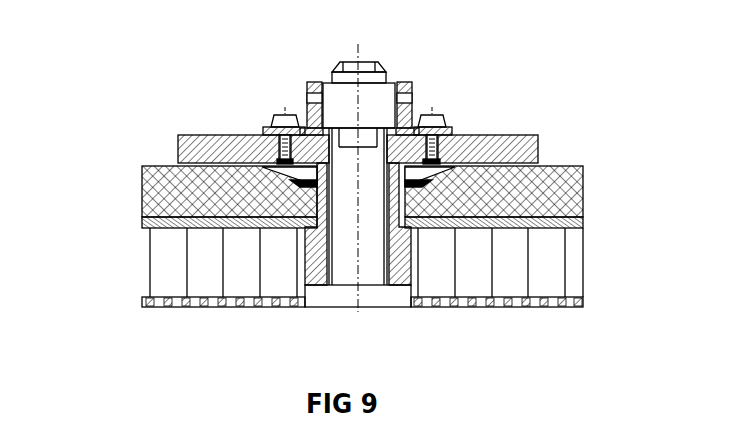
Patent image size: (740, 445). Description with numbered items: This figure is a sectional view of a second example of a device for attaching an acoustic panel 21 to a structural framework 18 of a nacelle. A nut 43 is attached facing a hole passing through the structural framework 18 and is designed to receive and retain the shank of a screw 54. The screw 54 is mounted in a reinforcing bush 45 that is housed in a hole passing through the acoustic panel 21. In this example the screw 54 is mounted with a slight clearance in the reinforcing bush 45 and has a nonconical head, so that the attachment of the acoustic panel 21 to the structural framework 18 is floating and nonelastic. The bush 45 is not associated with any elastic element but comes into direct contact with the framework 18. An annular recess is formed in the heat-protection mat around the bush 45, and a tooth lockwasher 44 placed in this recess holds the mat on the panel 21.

The structural framework 18 is at (158, 123).
The acoustic panel 21 is at (176, 271).
The nut 43 is at (411, 79).
The tooth lockwasher 44 is at (486, 135).
The reinforcing bush 45 is at (315, 255).
The screw 54 is at (383, 309).